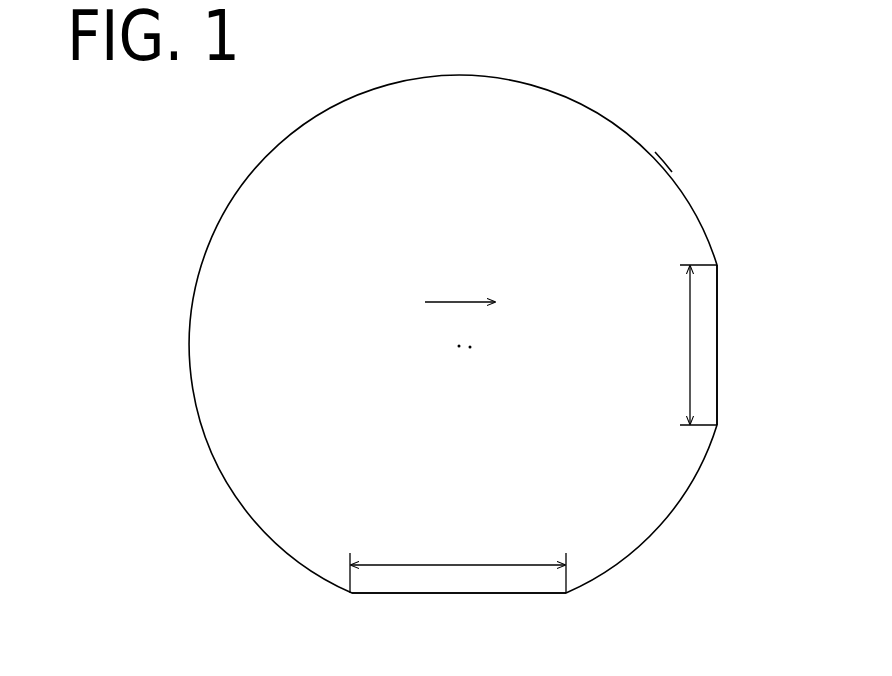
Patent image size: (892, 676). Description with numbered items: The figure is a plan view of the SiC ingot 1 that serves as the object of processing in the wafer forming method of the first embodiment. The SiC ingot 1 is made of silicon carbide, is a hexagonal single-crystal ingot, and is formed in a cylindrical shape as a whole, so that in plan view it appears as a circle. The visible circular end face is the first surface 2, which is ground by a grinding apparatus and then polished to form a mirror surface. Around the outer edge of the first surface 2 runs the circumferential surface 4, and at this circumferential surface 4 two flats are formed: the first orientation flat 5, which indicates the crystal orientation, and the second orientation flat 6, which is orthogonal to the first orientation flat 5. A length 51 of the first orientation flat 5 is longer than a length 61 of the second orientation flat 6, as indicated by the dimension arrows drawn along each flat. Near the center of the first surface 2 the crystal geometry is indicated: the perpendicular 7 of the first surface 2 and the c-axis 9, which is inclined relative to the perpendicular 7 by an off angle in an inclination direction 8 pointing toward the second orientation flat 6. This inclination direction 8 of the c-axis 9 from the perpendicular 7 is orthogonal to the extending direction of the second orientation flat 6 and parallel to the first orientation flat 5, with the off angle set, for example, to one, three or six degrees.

The SiC ingot 1 is at (240, 188).
The first surface 2 is at (598, 146).
The circumferential surface 4 is at (664, 160).
The first orientation flat 5 is at (458, 597).
The length of first orientation flat 51 is at (458, 565).
The second orientation flat 6 is at (718, 347).
The length of second orientation flat 61 is at (690, 347).
The perpendicular 7 is at (459, 346).
The inclination direction 8 is at (460, 302).
The c-axis 9 is at (470, 347).